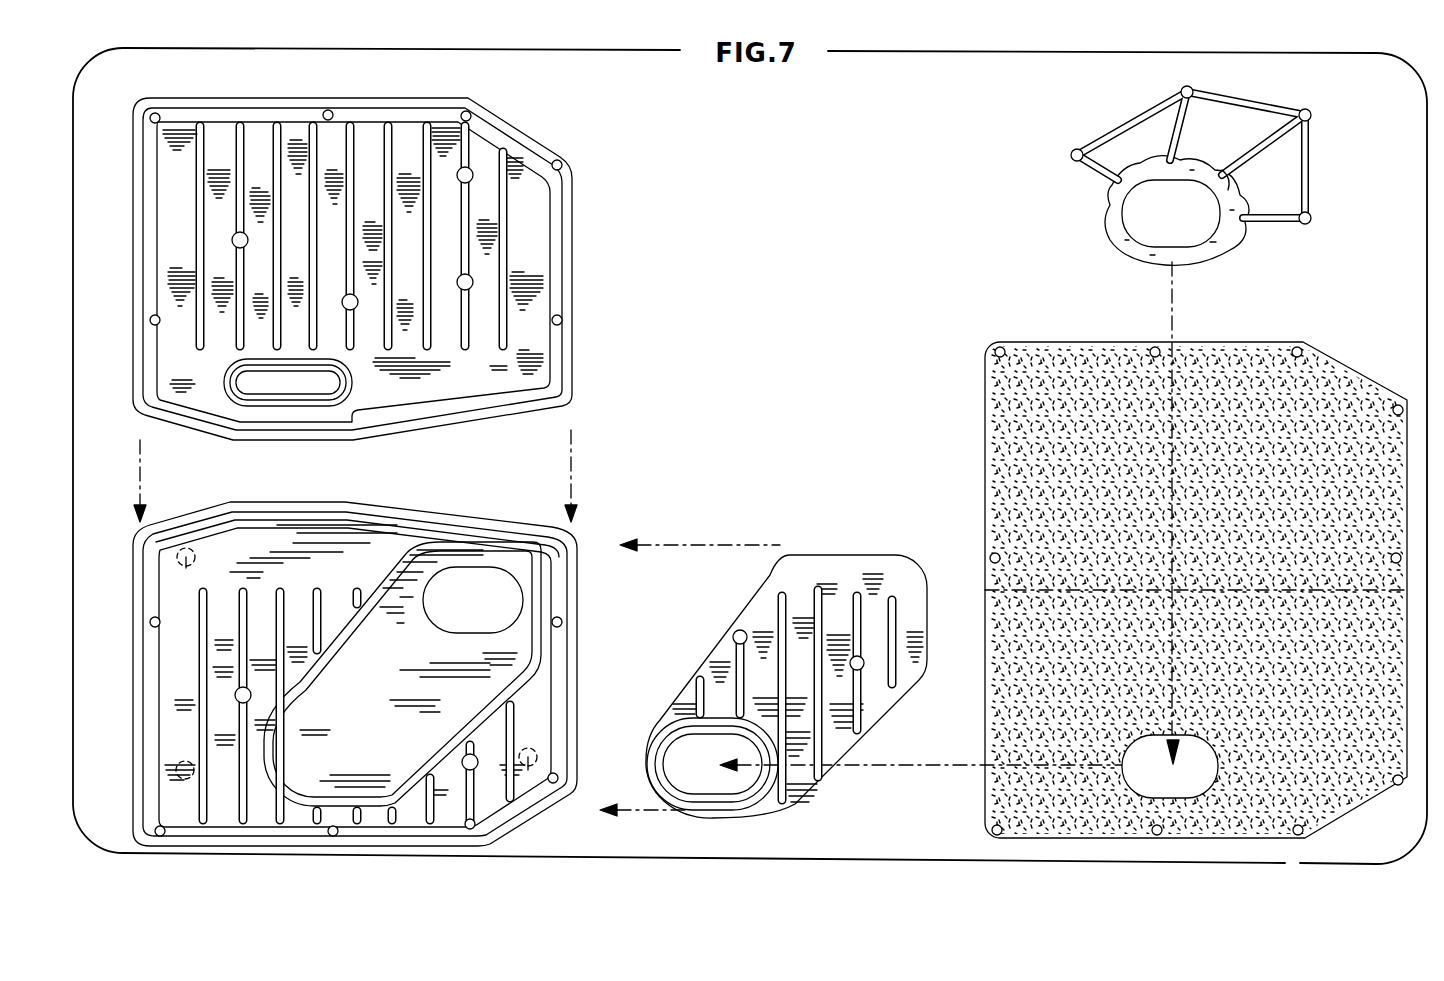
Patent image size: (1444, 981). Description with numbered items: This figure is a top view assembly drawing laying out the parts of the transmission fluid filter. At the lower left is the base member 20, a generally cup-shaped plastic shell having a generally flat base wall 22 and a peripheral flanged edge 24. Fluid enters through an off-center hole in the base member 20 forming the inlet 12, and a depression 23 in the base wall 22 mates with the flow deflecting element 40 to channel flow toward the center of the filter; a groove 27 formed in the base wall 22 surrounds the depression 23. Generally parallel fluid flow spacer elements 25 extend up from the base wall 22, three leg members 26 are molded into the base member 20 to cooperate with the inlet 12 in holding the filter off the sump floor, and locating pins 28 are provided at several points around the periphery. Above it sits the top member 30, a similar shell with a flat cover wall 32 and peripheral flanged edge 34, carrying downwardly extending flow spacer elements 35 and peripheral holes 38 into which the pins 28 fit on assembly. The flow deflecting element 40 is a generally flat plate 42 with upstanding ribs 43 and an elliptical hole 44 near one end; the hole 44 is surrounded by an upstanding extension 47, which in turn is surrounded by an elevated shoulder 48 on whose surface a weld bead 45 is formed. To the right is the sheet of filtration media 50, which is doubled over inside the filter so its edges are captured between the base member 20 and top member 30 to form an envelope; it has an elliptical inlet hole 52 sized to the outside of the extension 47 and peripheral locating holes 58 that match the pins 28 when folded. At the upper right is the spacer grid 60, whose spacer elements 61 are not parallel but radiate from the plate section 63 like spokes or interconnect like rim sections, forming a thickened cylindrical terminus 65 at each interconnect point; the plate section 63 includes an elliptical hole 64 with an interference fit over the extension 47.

The inlet 12 is at (493, 596).
The base member 20 is at (578, 535).
The base wall 22 is at (530, 725).
The depression 23 is at (470, 660).
The peripheral flanged edge 24 is at (432, 840).
The fluid flow spacer elements 25 is at (243, 800).
The leg members 26 is at (185, 545).
The groove 27 is at (377, 805).
The locating pins 28 is at (150, 622).
The top member 30 is at (575, 220).
The cover wall 32 is at (505, 360).
The peripheral flanged edge 34 is at (556, 262).
The flow spacer elements 35 is at (276, 169).
The holes 38 is at (150, 117).
The flow deflecting element 40 is at (895, 556).
The plate 42 is at (840, 740).
The ribs 43 is at (856, 598).
The elliptical hole 44 is at (702, 785).
The weld bead 45 is at (725, 690).
The extension 47 is at (762, 792).
The elevated shoulder 48 is at (740, 820).
The filtration media 50 is at (985, 396).
The elliptical inlet hole 52 is at (1148, 780).
The locating holes 58 is at (997, 348).
The spacer grid 60 is at (1100, 221).
The spacer elements 61 is at (1262, 107).
The plate section 63 is at (1226, 190).
The elliptical hole 64 is at (1138, 225).
The terminus 65 is at (1190, 90).